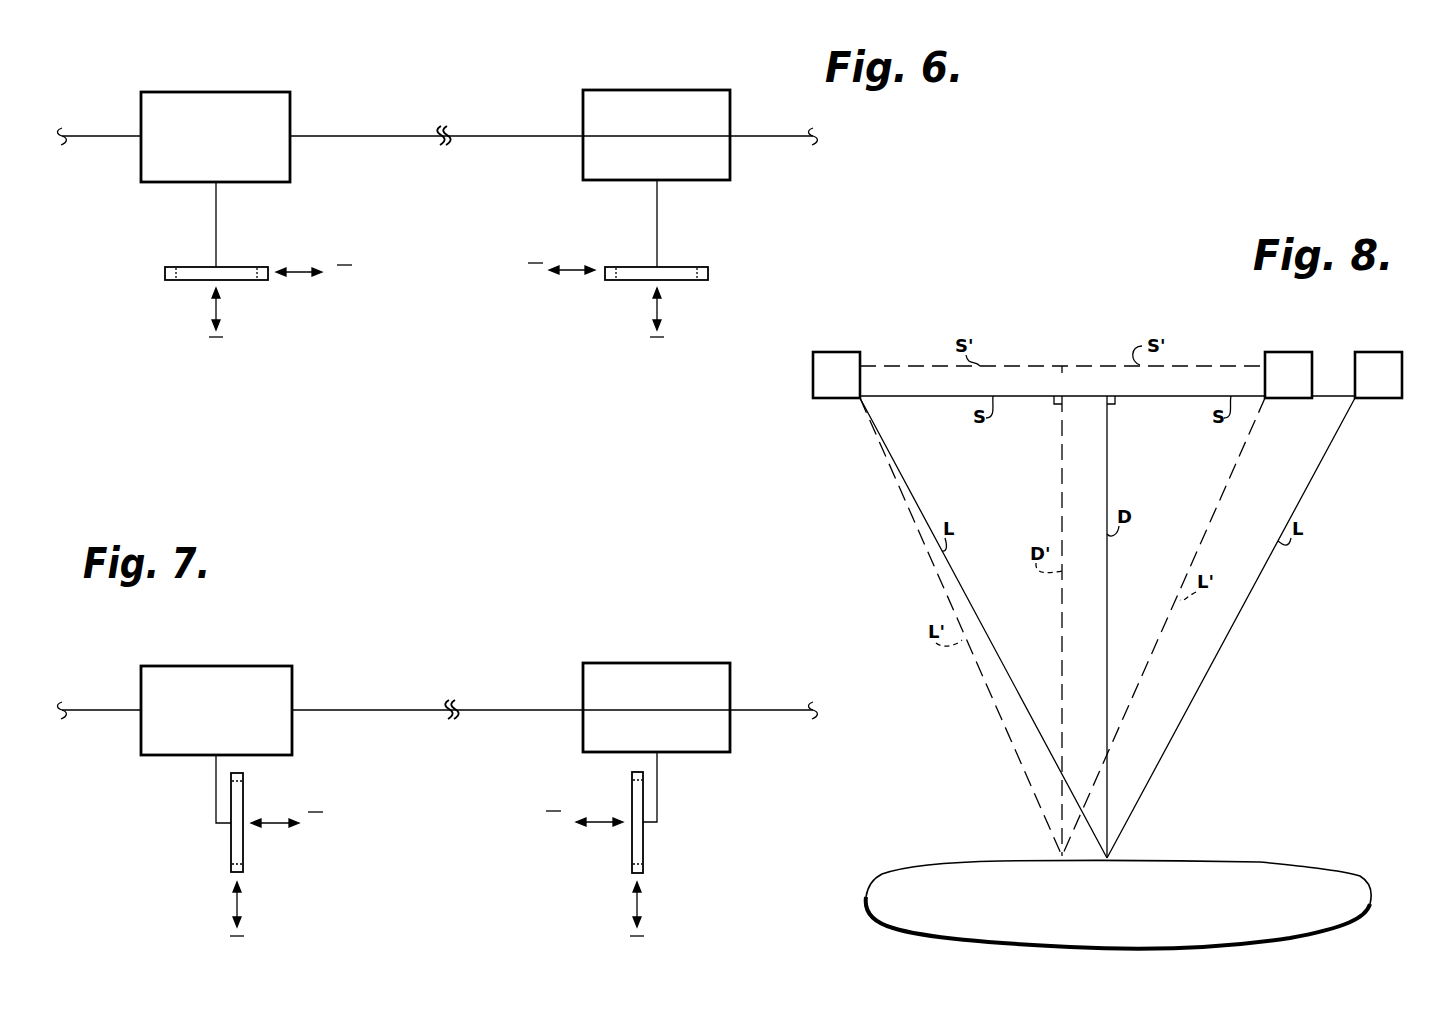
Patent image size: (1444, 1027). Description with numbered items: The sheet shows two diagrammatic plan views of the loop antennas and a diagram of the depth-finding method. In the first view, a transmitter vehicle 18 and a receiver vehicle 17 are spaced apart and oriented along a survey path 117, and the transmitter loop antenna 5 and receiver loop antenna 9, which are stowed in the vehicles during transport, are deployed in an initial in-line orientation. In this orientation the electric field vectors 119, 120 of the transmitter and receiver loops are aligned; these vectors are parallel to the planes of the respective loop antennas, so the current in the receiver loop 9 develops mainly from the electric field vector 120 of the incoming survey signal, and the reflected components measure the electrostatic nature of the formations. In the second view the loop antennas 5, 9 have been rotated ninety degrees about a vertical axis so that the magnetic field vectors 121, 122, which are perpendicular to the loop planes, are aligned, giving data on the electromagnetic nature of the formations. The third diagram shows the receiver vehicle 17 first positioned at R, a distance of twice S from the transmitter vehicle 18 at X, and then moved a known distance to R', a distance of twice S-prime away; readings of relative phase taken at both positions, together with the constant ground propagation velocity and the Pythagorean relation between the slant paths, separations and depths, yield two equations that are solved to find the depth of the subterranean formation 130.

In FIG. 6, the transmitter vehicle 18 is at (156, 94).
In FIG. 7, the transmitter vehicle 18 is at (156, 668).
In FIG. 8, the transmitter vehicle 18 is at (826, 357).
In FIG. 6, the receiver vehicle 17 is at (708, 93).
In FIG. 7, the receiver vehicle 17 is at (712, 668).
In FIG. 8, the receiver vehicle 17 is at (1278, 352).
In FIG. 6, the survey path 117 is at (361, 136).
In FIG. 7, the survey path 117 is at (473, 710).
In FIG. 6, the transmitter loop antenna 5 is at (193, 267).
In FIG. 7, the transmitter loop antenna 5 is at (231, 848).
In FIG. 6, the receiver loop antenna 9 is at (680, 267).
In FIG. 7, the receiver loop antenna 9 is at (643, 853).
In FIG. 6, the electric field vector of transmitter loop 119 is at (298, 272).
In FIG. 6, the electric field vector of receiver loop 120 is at (566, 270).
In FIG. 7, the magnetic field vector of transmitter loop 121 is at (276, 823).
In FIG. 7, the magnetic field vector of receiver loop 122 is at (600, 822).
In FIG. 8, the subterranean formation 130 is at (1182, 867).